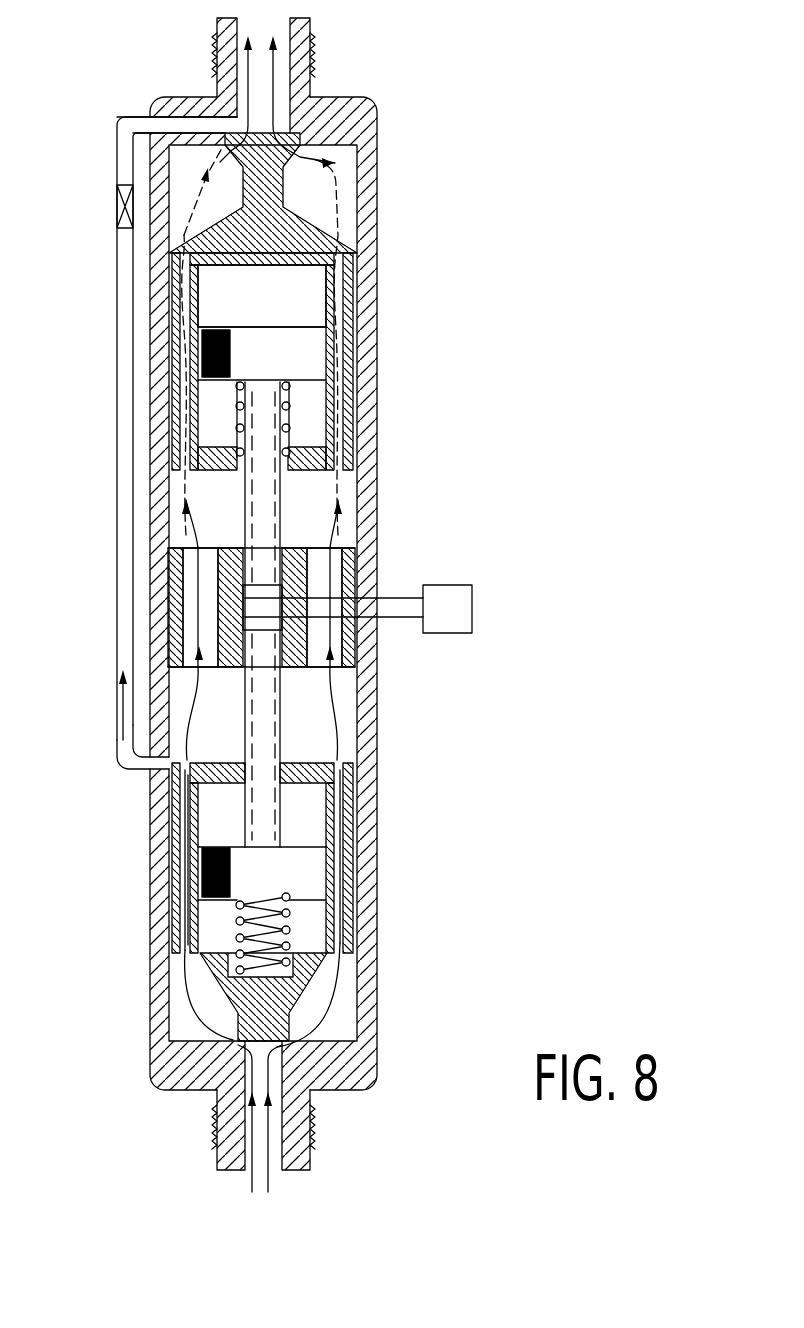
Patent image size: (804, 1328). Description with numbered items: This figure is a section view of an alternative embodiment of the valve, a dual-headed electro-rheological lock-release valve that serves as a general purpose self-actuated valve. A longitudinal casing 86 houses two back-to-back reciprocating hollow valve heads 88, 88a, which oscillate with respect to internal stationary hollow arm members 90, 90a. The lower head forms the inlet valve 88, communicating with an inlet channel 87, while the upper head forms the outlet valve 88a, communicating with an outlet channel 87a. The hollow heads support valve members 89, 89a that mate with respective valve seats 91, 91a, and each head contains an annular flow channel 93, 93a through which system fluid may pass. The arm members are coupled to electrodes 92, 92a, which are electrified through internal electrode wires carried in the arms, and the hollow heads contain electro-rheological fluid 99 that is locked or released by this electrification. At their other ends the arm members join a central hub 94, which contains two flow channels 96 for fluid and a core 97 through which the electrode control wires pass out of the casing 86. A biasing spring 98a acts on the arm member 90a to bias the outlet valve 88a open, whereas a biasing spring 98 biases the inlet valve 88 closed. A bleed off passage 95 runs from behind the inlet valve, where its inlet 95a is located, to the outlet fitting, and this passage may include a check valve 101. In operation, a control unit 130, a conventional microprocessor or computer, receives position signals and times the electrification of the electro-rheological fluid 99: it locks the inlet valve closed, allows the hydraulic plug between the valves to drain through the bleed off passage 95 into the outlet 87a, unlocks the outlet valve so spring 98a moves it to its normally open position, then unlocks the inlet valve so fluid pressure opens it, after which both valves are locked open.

The longitudinal casing 86 is at (377, 513).
The inlet channel 87 is at (260, 1133).
The outlet channel 87a is at (280, 80).
The inlet valve head 88 is at (271, 857).
The outlet valve head 88a is at (305, 338).
The valve member 89 is at (277, 1045).
The valve member 89a is at (300, 172).
The stationary hollow arm member 90 is at (335, 762).
The stationary hollow arm member 90a is at (245, 510).
The valve seat 91 is at (240, 1047).
The valve seat 91a is at (237, 147).
The electrode 92 is at (303, 875).
The electrode 92a is at (303, 340).
The annular flow channel 93 is at (345, 910).
The annular flow channel 93a is at (345, 345).
The central hub 94 is at (280, 670).
The bleed off passage 95 is at (123, 454).
The bleed-off passage inlet 95a is at (130, 753).
The flow channels 96 is at (190, 597).
The core 97 is at (340, 585).
The biasing spring 98 is at (240, 952).
The biasing spring 98a is at (237, 410).
The electro-rheological fluid 99 is at (272, 313).
The check valve 101 is at (118, 217).
The control unit 130 is at (460, 605).